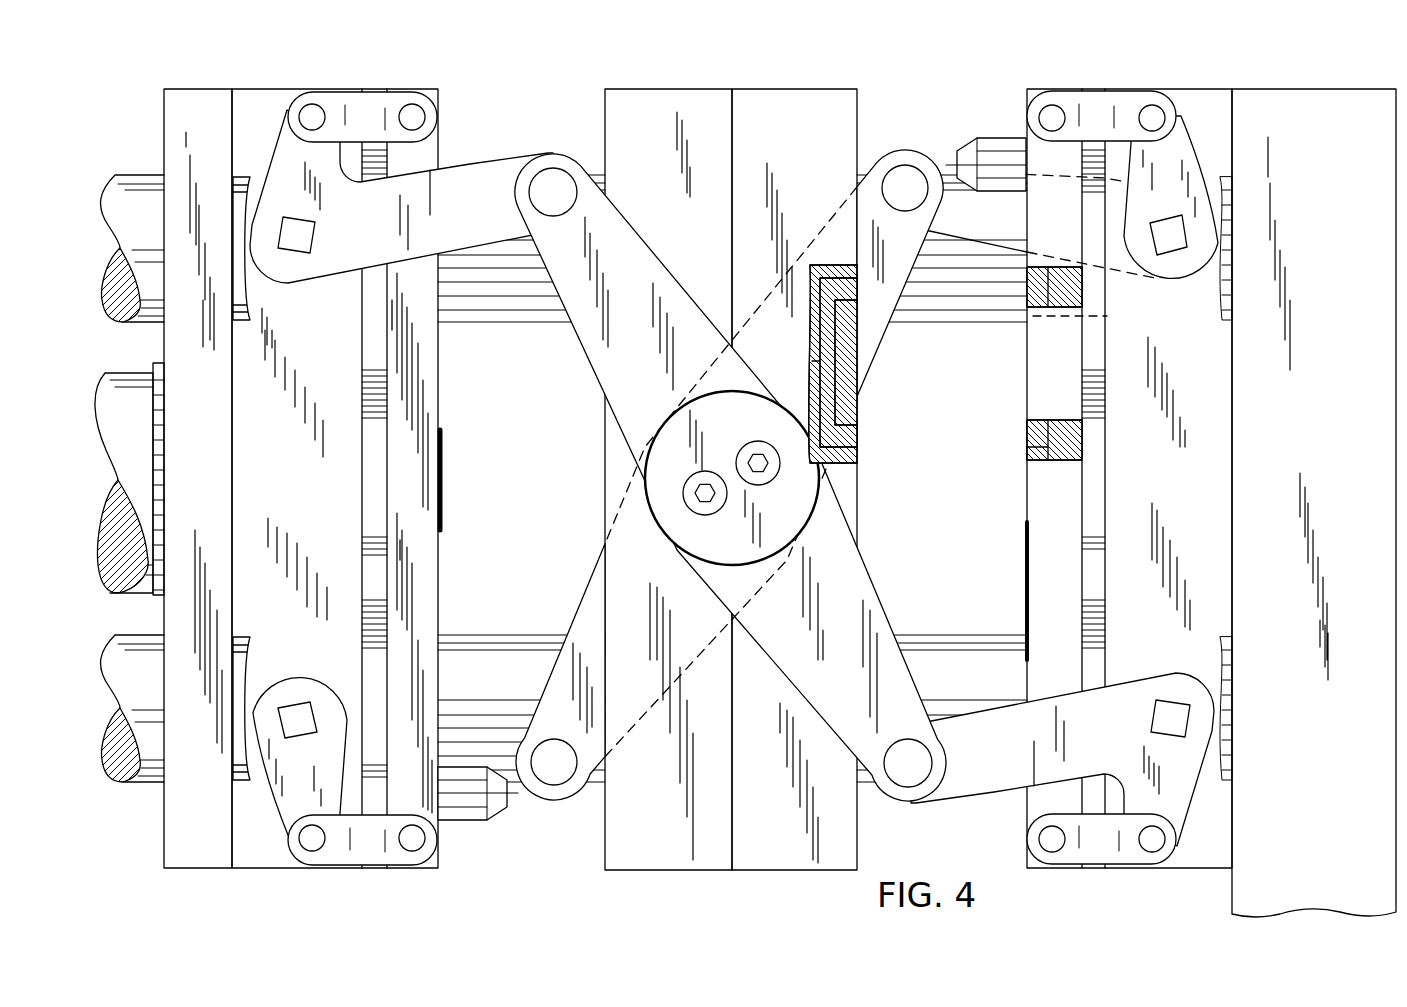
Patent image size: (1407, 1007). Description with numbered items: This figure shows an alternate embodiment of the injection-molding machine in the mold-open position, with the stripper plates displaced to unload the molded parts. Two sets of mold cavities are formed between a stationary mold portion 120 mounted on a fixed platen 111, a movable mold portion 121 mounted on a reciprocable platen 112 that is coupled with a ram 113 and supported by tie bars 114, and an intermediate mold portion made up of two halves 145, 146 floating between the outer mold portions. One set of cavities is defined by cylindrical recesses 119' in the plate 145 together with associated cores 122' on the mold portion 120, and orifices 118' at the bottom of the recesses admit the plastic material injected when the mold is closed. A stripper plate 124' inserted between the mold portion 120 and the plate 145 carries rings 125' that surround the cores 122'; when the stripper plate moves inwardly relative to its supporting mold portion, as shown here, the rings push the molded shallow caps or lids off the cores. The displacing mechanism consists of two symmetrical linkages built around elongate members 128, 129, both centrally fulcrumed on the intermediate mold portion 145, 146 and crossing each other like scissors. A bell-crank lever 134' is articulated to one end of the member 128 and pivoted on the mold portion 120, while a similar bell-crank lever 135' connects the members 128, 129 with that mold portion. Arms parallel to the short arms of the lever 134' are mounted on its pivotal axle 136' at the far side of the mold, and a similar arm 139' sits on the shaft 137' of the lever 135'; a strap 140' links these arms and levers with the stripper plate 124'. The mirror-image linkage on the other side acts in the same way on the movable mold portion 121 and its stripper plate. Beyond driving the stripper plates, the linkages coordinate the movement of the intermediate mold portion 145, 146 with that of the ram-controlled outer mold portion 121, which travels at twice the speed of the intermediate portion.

The fixed platen 111 is at (1300, 95).
The reciprocable platen 112 is at (197, 90).
The ram 113 is at (113, 380).
The tie bars 114 is at (135, 177).
The orifices 118' is at (807, 364).
The cylindrical recesses 119' is at (875, 362).
The stationary mold portion 120 is at (1203, 97).
The movable mold portion 121 is at (262, 98).
The cores 122' is at (1137, 478).
The stripper plate 124' is at (1040, 164).
The rings 125' is at (1021, 463).
The elongate member 128 is at (633, 243).
The elongate member 129 is at (905, 257).
The bell-crank lever 134' is at (1062, 736).
The bell-crank lever 135' is at (960, 152).
The pivotal axle 136' is at (1134, 726).
The shaft 137' is at (1163, 275).
The arm 139' is at (1178, 224).
The strap 140' is at (1101, 487).
The intermediate mold portion half 145 is at (795, 100).
The intermediate mold portion half 146 is at (668, 100).